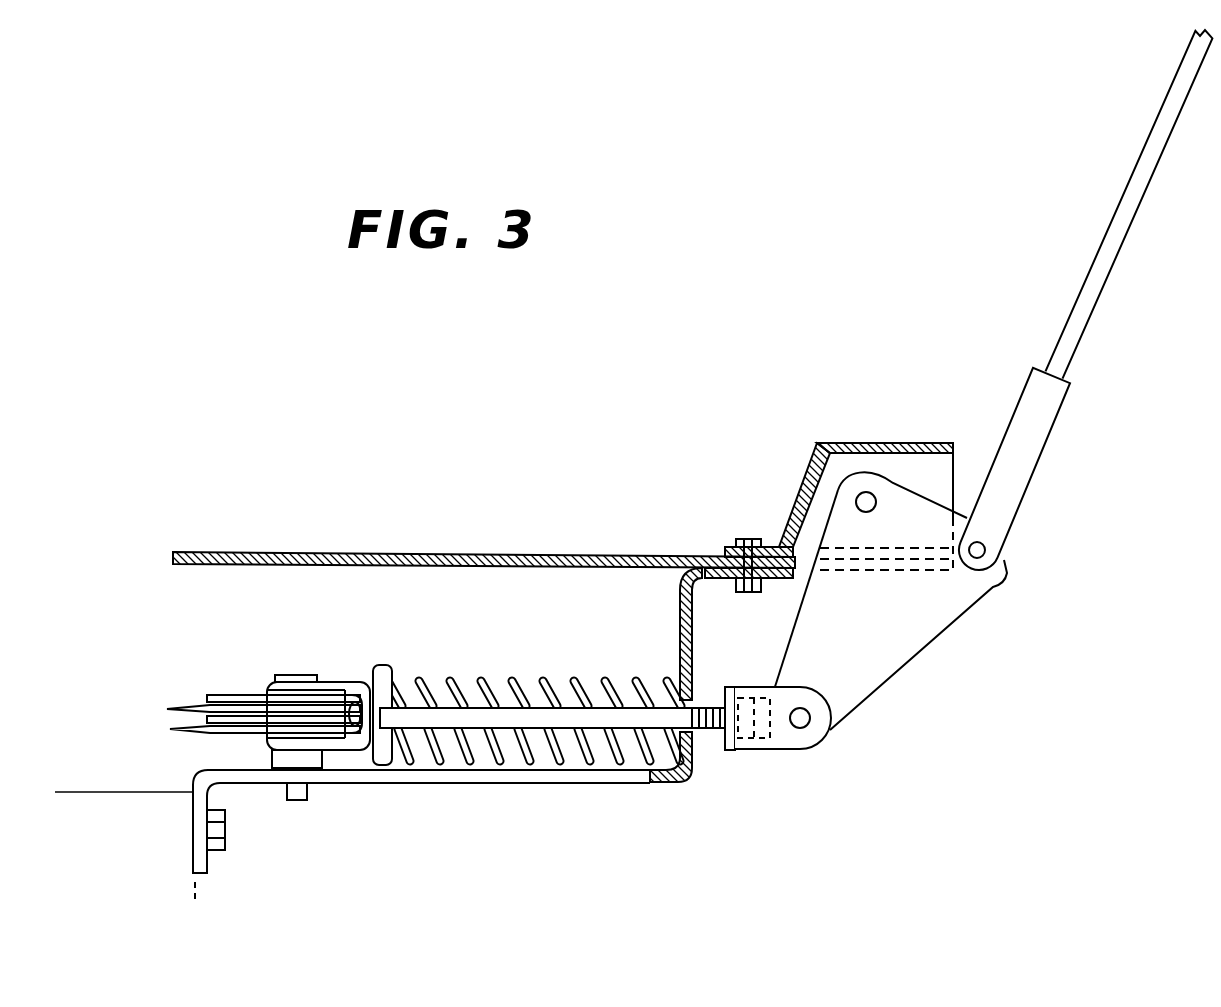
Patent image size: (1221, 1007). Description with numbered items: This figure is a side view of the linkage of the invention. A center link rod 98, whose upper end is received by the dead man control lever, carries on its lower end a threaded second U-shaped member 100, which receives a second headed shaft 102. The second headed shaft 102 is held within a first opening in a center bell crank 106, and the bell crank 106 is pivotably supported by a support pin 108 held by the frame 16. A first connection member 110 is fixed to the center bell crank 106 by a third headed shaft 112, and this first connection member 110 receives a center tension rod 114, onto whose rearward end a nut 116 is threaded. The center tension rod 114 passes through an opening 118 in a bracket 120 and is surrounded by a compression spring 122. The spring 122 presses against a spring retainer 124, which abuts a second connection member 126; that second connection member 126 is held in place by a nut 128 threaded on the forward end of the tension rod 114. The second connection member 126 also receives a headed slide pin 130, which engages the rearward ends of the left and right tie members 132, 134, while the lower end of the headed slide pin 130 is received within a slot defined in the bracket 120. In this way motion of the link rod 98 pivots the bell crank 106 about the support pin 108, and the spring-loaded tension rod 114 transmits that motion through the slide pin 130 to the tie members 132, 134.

The frame 16 is at (697, 557).
The center link rod 98 is at (1132, 175).
The second U-shaped member 100 is at (1050, 432).
The second headed shaft 102 is at (985, 545).
The center bell crank 106 is at (927, 643).
The support pin 108 is at (856, 498).
The first connection member 110 is at (755, 750).
The third headed shaft 112 is at (803, 723).
The center tension rod 114 is at (588, 713).
The nut 116 is at (768, 690).
The opening 118 is at (692, 738).
The bracket 120 is at (640, 785).
The compression spring 122 is at (551, 678).
The spring retainer 124 is at (386, 665).
The second connection member 126 is at (366, 686).
The nut 128 is at (352, 718).
The headed slide pin 130 is at (290, 676).
The left tie member 132 is at (170, 707).
The right tie member 134 is at (222, 695).